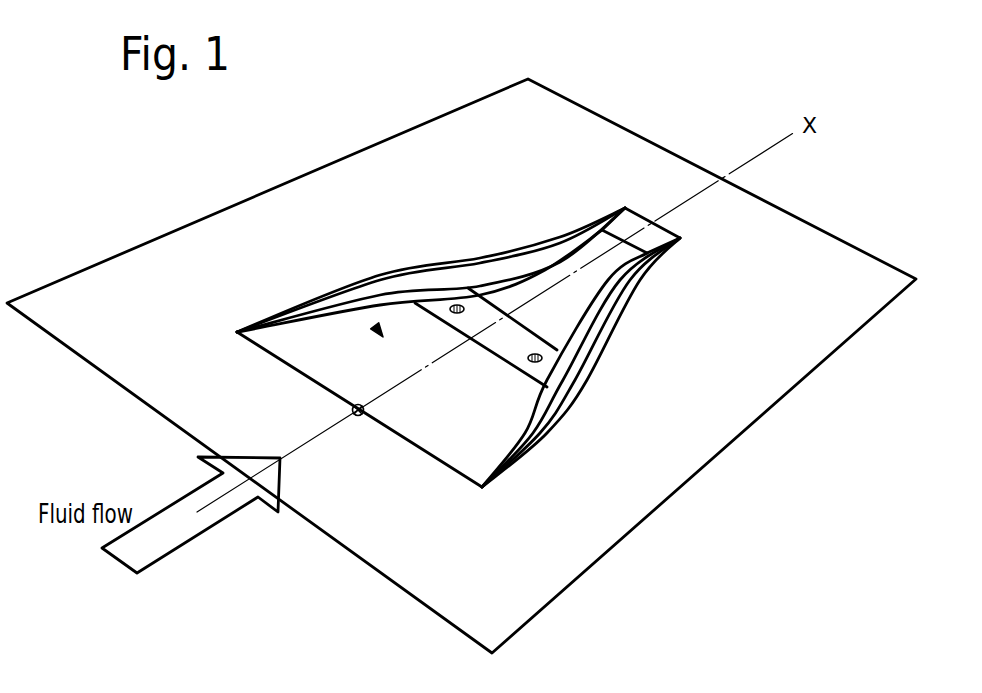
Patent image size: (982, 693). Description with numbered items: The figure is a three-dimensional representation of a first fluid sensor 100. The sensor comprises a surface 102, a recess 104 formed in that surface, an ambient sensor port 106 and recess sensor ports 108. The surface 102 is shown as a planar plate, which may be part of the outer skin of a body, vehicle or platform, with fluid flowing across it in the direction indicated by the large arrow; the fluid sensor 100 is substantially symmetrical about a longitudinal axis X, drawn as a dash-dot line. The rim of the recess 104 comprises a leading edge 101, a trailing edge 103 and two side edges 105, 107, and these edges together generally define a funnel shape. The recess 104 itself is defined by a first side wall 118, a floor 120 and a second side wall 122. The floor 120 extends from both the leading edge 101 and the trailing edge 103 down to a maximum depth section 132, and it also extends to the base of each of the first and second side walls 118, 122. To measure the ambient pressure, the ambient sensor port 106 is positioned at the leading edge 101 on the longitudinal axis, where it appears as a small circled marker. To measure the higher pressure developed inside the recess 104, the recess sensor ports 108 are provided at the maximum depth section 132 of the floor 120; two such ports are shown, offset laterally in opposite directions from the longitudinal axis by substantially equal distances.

The fluid sensor 100 is at (480, 332).
The leading edge 101 is at (247, 350).
The surface 102 is at (800, 277).
The trailing edge 103 is at (640, 212).
The recess 104 is at (378, 331).
The side edge 105 is at (307, 297).
The ambient sensor port 106 is at (358, 418).
The side edge 107 is at (557, 433).
The recess sensor ports 108 is at (463, 308).
The first side wall 118 is at (520, 262).
The floor 120 is at (585, 252).
The second side wall 122 is at (565, 383).
The maximum depth section 132 is at (503, 343).